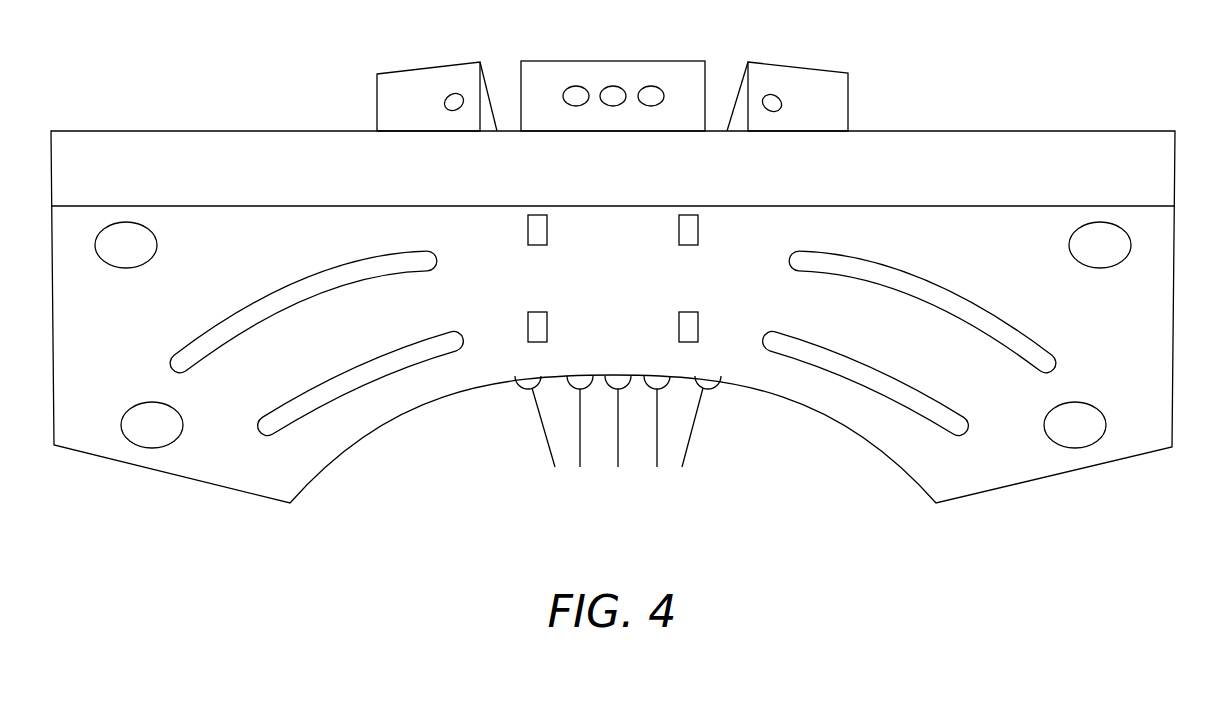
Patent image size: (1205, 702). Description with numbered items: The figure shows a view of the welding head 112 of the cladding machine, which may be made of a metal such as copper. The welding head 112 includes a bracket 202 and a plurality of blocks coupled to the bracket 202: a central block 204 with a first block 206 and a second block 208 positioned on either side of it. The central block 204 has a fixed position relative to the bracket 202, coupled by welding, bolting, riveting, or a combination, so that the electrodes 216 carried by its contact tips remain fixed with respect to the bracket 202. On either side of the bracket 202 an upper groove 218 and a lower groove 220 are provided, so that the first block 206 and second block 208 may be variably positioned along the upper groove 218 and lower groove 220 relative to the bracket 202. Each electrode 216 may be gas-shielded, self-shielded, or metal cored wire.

The welding head 112 is at (613, 297).
The bracket 202 is at (126, 152).
The central block 204 is at (613, 61).
The first block 206 is at (429, 62).
The second block 208 is at (800, 73).
The electrode 216 is at (702, 493).
The upper groove 218 is at (226, 318).
The lower groove 220 is at (347, 392).